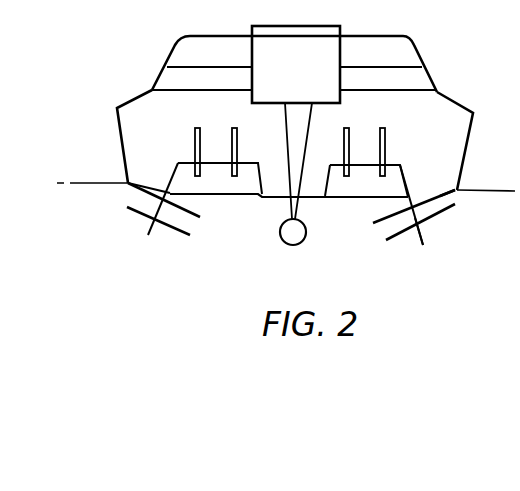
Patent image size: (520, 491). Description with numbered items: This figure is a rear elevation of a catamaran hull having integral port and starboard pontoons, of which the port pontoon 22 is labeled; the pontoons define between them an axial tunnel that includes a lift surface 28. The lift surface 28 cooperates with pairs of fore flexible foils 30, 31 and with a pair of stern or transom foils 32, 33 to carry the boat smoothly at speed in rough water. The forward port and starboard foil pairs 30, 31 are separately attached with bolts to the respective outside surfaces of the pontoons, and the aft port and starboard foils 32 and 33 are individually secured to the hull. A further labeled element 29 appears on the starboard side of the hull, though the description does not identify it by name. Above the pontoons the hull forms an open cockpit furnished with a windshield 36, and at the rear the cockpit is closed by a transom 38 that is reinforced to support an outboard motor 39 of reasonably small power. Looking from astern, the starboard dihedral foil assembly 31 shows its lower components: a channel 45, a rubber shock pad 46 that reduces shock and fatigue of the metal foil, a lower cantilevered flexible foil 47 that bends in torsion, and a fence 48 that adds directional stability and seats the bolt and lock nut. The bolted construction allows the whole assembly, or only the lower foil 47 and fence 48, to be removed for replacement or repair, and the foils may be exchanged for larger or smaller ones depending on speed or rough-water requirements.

The port pontoon 22 is at (140, 150).
The lift surface 28 is at (220, 166).
The hull side 29 is at (443, 147).
The fore flexible foil 30 is at (153, 226).
The starboard dihedral foil assembly 31 is at (423, 245).
The aft port foil 32 is at (213, 180).
The aft starboard foil 33 is at (362, 178).
The windshield 36 is at (402, 53).
The transom 38 is at (418, 123).
The outboard motor 39 is at (305, 71).
The channel 45 is at (385, 231).
The rubber shock pad 46 is at (387, 217).
The lower cantilevered flexible foil 47 is at (450, 216).
The fence 48 is at (423, 233).